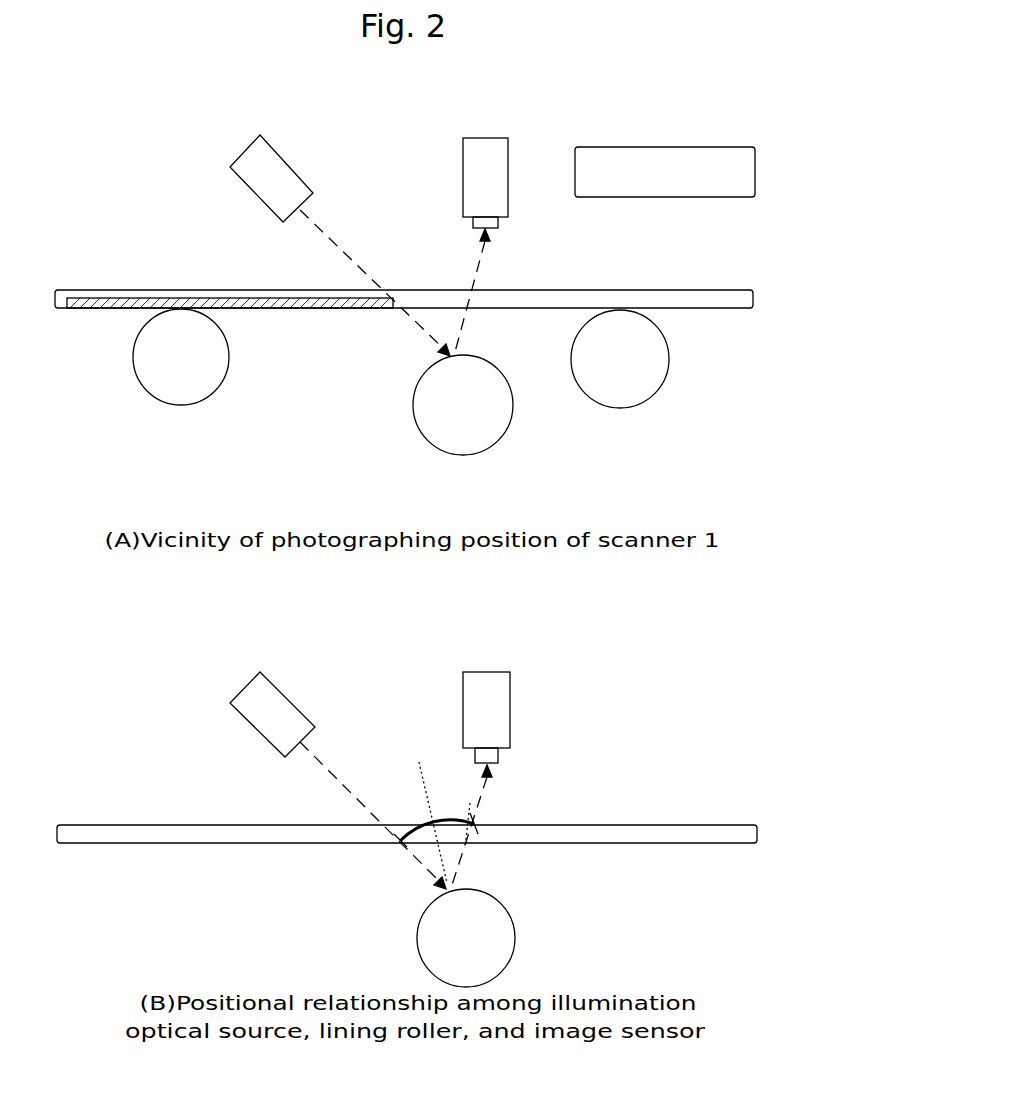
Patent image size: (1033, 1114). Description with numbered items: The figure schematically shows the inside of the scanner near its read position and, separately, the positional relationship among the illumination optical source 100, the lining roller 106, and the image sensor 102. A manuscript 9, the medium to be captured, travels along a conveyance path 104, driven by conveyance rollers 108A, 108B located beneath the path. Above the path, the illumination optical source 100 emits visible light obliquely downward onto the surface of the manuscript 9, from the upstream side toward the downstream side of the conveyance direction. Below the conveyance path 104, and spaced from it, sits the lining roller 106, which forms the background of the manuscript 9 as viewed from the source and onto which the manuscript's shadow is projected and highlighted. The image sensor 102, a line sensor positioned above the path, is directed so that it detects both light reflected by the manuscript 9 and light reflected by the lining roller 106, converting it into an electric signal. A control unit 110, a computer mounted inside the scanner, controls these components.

The illumination optical source 100 is at (245, 675).
The image sensor 102 is at (493, 138).
The control unit 110 is at (650, 147).
The conveyance path 104 is at (747, 310).
The manuscript 9 is at (170, 298).
The conveyance roller 108A is at (167, 405).
The conveyance roller 108B is at (645, 407).
The lining roller 106 is at (507, 435).